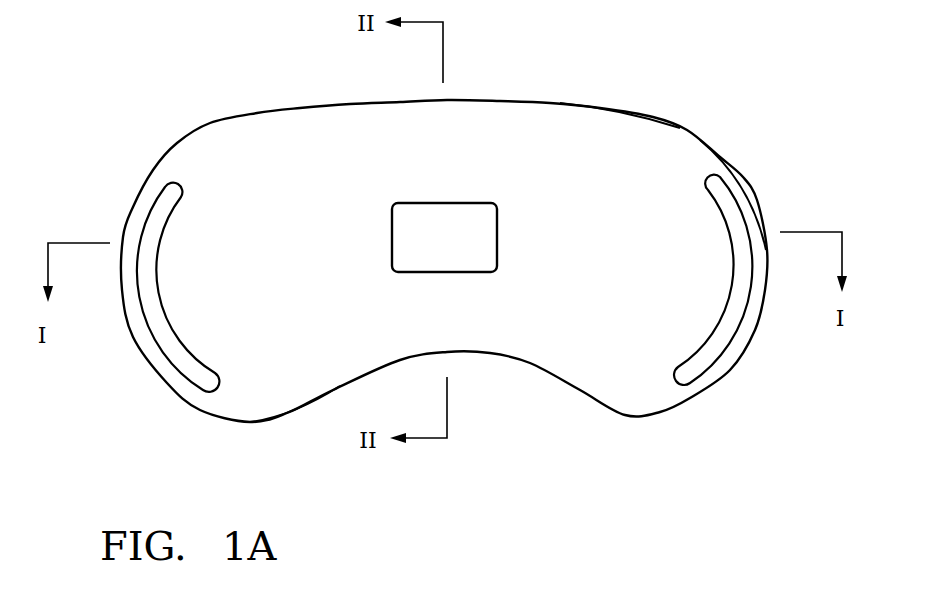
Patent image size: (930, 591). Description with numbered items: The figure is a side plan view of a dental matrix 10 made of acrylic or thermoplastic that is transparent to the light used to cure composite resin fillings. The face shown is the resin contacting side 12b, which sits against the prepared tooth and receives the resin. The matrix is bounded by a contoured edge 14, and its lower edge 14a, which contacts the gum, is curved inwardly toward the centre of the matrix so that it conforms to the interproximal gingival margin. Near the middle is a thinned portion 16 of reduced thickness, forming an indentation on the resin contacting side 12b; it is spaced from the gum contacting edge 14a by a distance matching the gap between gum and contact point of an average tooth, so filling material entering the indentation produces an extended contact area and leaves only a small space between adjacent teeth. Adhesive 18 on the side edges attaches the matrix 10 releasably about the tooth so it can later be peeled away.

The matrix 10 is at (238, 108).
The resin contacting side 12b is at (650, 131).
The contoured edge 14 is at (753, 189).
The gum contacting edge 14a is at (315, 401).
The thinned portion 16 is at (481, 260).
The adhesive 18 is at (186, 370).